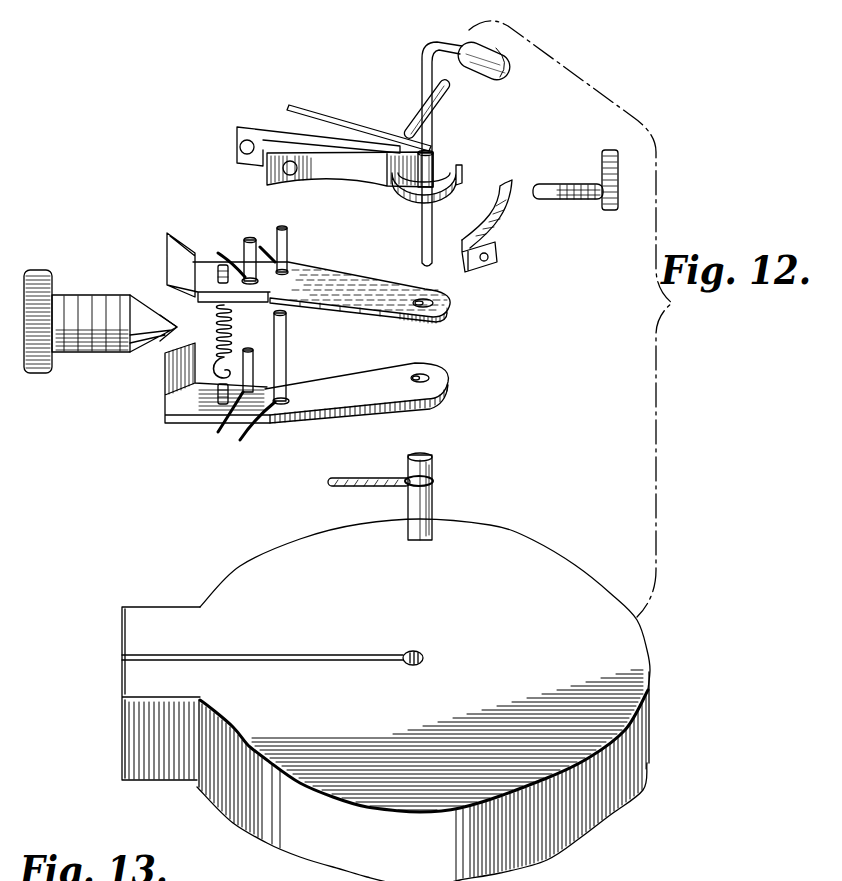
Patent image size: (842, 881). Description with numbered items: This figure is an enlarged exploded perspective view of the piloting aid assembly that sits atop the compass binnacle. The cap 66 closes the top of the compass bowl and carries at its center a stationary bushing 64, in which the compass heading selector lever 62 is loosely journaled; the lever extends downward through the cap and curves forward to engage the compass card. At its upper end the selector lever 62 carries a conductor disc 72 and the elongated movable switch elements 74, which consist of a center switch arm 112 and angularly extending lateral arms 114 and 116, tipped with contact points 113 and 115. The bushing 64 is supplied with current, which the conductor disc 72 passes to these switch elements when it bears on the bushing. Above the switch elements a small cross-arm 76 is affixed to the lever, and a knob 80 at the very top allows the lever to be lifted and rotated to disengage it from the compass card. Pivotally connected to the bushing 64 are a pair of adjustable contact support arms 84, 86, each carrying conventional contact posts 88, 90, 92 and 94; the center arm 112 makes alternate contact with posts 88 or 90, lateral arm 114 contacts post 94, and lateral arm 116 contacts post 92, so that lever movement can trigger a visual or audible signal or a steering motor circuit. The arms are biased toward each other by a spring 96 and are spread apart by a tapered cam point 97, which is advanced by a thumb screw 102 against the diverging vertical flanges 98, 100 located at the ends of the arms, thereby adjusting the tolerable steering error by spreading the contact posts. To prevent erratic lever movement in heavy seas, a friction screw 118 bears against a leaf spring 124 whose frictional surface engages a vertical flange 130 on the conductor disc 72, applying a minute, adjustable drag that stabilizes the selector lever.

The compass heading selector lever 62 is at (420, 247).
The bushing 64 is at (423, 511).
The cap 66 is at (550, 566).
The conductor disc 72 is at (440, 167).
The switch elements 74 is at (377, 119).
The cross-arm 76 is at (442, 101).
The knob 80 is at (505, 68).
The adjustable contact support arm 84 is at (367, 284).
The adjustable contact support arm 86 is at (338, 383).
The contact post 88 is at (247, 249).
The contact post 90 is at (248, 364).
The contact post 92 is at (288, 243).
The contact post 94 is at (287, 345).
The spring 96 is at (230, 331).
The tapered cam point 97 is at (180, 333).
The diverging vertical flange 98 is at (165, 375).
The diverging vertical flange 100 is at (173, 258).
The thumb screw 102 is at (63, 302).
The center switch arm 112 is at (266, 130).
The contact point 113 is at (288, 175).
The lateral switch arm 114 is at (323, 173).
The contact point 115 is at (244, 152).
The lateral switch arm 116 is at (302, 124).
The friction screw 118 is at (578, 199).
The leaf spring 124 is at (503, 217).
The vertical flange 130 is at (455, 174).